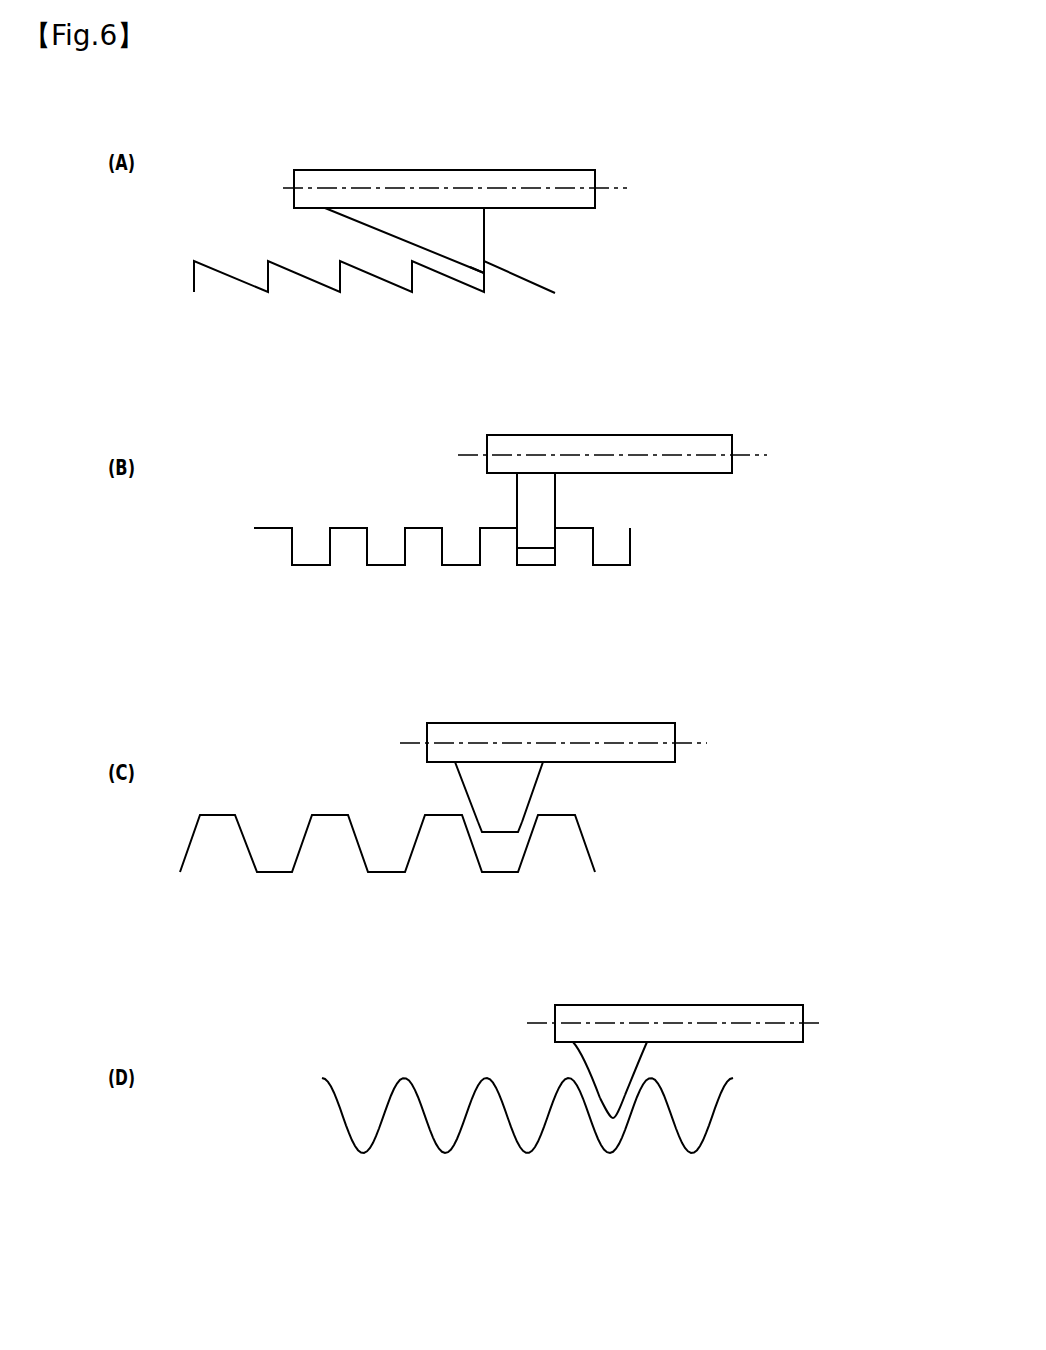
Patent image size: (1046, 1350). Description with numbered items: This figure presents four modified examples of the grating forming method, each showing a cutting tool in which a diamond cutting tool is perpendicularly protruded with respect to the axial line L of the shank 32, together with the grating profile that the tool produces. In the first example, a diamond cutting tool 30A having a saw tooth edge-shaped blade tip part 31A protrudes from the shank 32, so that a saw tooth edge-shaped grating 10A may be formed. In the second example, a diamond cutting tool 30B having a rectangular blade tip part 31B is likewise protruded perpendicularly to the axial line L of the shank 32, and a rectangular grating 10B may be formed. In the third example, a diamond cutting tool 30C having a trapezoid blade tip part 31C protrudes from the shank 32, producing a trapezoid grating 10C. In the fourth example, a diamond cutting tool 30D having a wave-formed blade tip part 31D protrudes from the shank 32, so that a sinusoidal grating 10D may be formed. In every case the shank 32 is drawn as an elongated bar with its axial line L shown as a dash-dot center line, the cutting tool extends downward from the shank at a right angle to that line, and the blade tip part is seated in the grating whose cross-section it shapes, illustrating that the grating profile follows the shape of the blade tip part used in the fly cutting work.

The shank 32 is at (512, 176).
The axial line L is at (585, 187).
The saw tooth edge-shaped grating 10A is at (300, 257).
The diamond cutting tool 30A is at (473, 227).
The saw tooth edge-shaped blade tip part 31A is at (470, 255).
The rectangular grating 10B is at (403, 522).
The diamond cutting tool 30B is at (540, 503).
The rectangular blade tip part 31B is at (533, 533).
The trapezoid grating 10C is at (330, 807).
The diamond cutting tool 30C is at (520, 780).
The trapezoid blade tip part 31C is at (503, 823).
The sinusoidal grating 10D is at (450, 1093).
The diamond cutting tool 30D is at (613, 1072).
The wave-formed blade tip part 31D is at (617, 1092).